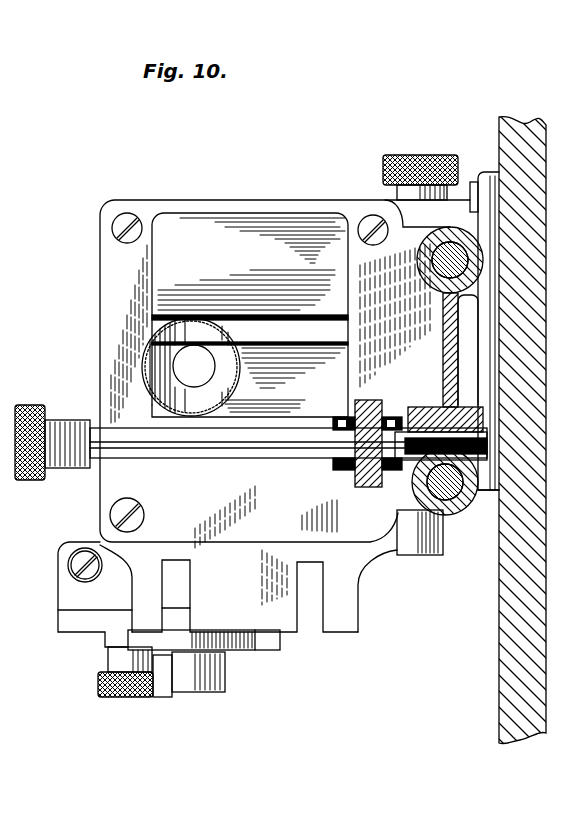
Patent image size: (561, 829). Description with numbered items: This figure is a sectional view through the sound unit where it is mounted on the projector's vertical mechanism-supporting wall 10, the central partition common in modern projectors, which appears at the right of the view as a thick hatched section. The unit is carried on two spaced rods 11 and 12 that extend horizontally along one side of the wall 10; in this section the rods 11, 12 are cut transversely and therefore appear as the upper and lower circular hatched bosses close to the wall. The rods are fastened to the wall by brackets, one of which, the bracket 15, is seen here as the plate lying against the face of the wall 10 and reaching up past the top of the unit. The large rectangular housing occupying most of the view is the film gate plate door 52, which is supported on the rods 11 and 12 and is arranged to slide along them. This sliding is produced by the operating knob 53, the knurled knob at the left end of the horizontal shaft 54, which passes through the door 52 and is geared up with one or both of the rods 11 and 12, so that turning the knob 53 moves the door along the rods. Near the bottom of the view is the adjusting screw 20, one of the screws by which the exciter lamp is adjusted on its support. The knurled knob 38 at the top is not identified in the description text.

The vertical mechanism-supporting wall 10 is at (520, 315).
The spaced rod 11 is at (432, 263).
The spaced rod 12 is at (427, 507).
The bracket 15 is at (482, 176).
The adjusting screw 20 is at (98, 686).
The knurled knob 38 is at (383, 170).
The film gate plate door 52 is at (112, 335).
The operating knob 53 is at (51, 420).
The shaft 54 is at (266, 445).